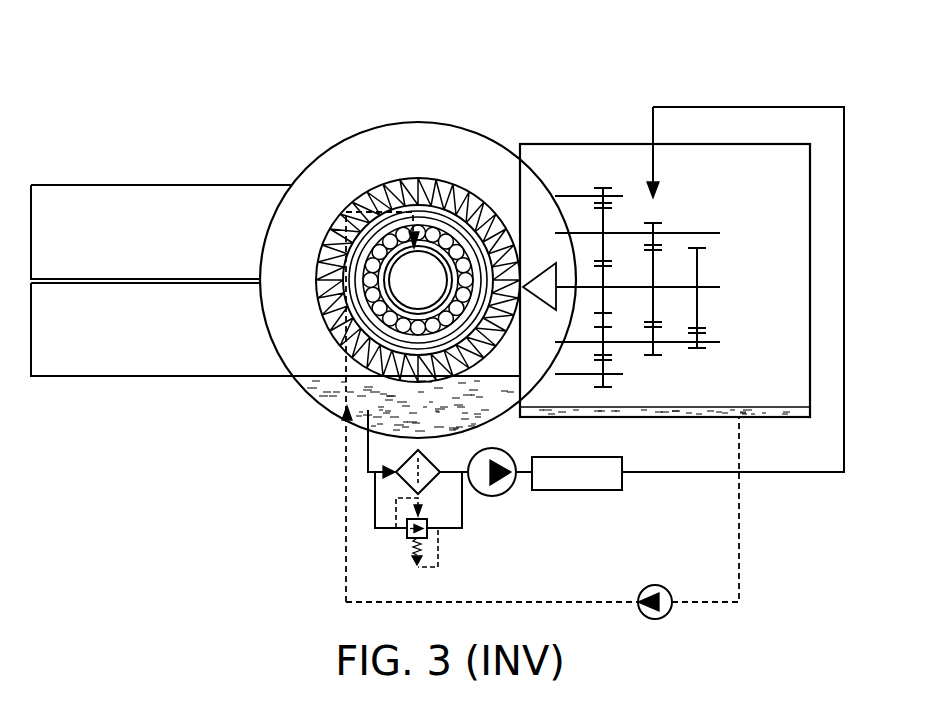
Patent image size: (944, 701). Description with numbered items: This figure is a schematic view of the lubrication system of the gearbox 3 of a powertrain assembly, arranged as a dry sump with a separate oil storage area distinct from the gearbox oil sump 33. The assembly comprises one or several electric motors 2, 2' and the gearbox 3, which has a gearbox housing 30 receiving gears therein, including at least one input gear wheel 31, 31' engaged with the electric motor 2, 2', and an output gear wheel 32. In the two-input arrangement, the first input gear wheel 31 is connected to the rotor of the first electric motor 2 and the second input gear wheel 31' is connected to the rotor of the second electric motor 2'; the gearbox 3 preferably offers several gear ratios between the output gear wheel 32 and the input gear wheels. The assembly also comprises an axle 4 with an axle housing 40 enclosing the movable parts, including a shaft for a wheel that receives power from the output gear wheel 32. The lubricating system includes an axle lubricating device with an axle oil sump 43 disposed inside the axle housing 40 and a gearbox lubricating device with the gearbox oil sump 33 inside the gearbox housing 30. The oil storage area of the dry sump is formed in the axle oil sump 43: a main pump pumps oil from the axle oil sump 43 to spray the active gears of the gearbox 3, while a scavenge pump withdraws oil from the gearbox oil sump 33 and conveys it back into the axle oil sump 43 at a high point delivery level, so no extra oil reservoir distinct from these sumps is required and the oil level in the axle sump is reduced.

The electric motor 2 is at (161, 198).
The electric motor 2' is at (161, 365).
The gearbox 3 is at (569, 115).
The axle 4 is at (390, 98).
The gearbox housing 30 is at (812, 230).
The first input gear wheel 31 is at (650, 235).
The second input gear wheel 31' is at (649, 426).
The output gear wheel 32 is at (543, 265).
The gearbox oil sump 33 is at (775, 418).
The axle housing 40 is at (450, 122).
The axle oil sump 43 is at (320, 403).